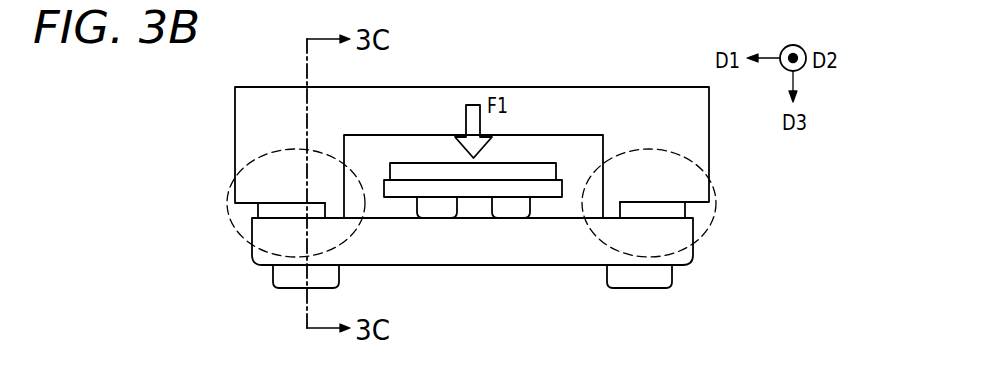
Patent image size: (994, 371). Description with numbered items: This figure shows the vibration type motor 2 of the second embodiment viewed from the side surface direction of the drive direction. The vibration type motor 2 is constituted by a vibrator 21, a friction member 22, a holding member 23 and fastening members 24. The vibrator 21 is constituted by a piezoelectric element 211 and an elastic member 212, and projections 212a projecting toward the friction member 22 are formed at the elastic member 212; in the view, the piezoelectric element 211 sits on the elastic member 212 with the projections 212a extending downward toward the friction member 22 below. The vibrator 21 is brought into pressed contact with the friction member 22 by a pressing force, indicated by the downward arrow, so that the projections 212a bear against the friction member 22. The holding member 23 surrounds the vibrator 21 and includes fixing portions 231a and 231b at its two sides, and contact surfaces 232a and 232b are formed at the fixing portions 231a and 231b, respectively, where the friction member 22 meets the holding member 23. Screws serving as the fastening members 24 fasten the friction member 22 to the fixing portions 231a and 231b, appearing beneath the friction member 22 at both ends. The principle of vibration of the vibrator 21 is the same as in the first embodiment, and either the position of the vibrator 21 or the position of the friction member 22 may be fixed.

The vibration type motor 2 is at (165, 108).
The vibrator 21 is at (380, 154).
The piezoelectric element 211 is at (422, 163).
The elastic member 212 is at (538, 189).
The projections 212a is at (437, 218).
The friction member 22 is at (565, 257).
The holding member 23 is at (530, 103).
The fixing portion 231a is at (228, 200).
The fixing portion 231b is at (717, 192).
The contact surface 232a is at (285, 219).
The contact surface 232b is at (660, 220).
The fastening members 24 is at (273, 275).